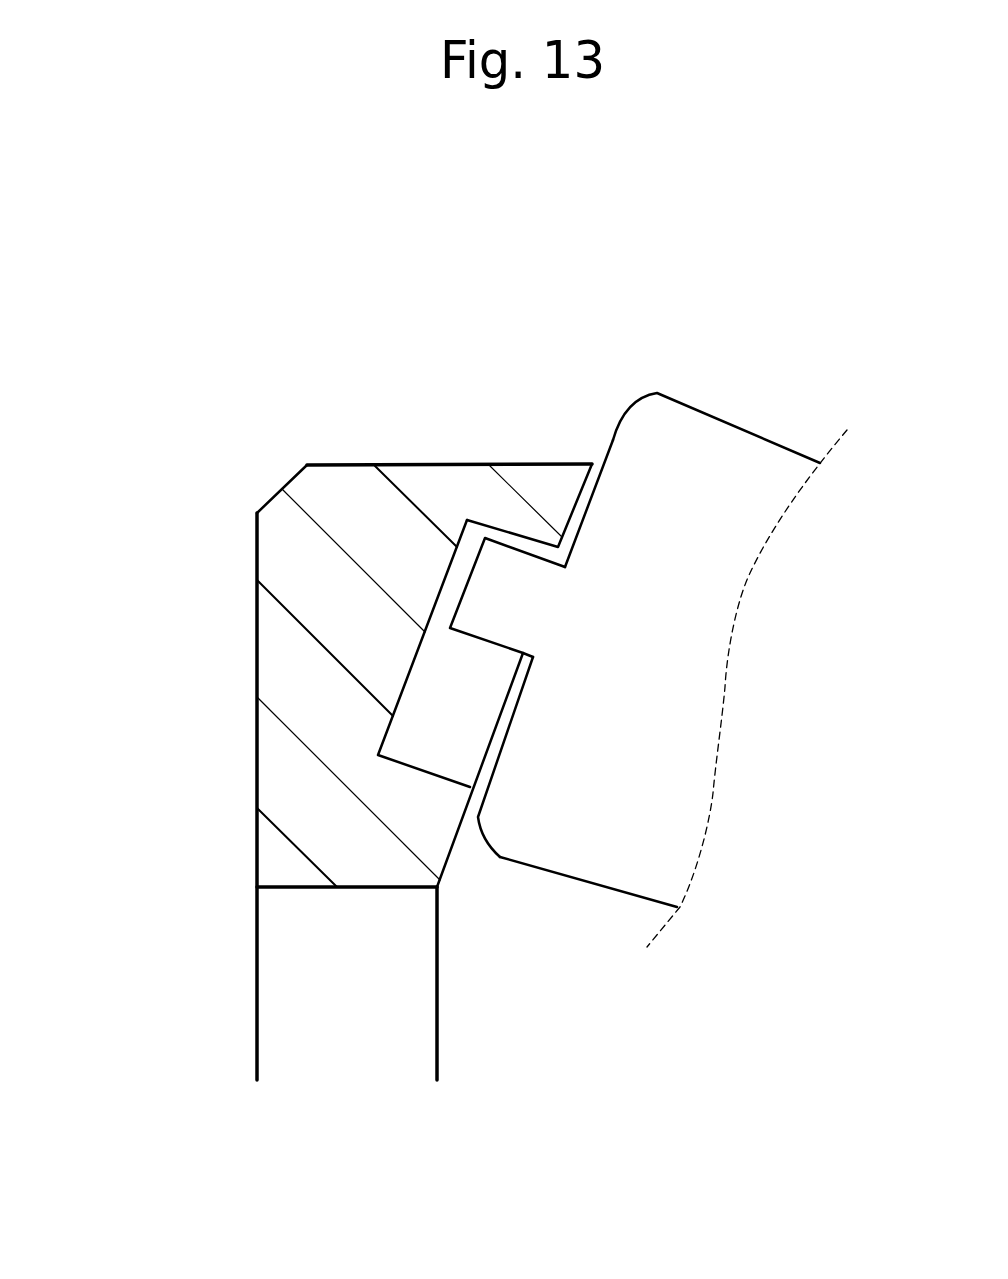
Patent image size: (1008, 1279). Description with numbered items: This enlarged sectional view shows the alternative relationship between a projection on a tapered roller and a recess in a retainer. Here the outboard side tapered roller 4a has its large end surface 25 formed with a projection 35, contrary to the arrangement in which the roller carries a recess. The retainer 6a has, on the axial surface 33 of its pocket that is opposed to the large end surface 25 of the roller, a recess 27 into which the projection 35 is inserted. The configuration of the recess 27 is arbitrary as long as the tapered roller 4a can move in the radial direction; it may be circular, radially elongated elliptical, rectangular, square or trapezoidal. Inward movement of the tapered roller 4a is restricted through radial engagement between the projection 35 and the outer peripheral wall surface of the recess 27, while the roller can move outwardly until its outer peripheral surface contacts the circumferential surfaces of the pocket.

The retainer 6a is at (235, 741).
The large end surface 25 is at (611, 437).
The projection 35 is at (512, 567).
The recess 27 is at (413, 677).
The axial surface 33 is at (460, 853).
The outboard side tapered roller 4a is at (637, 753).